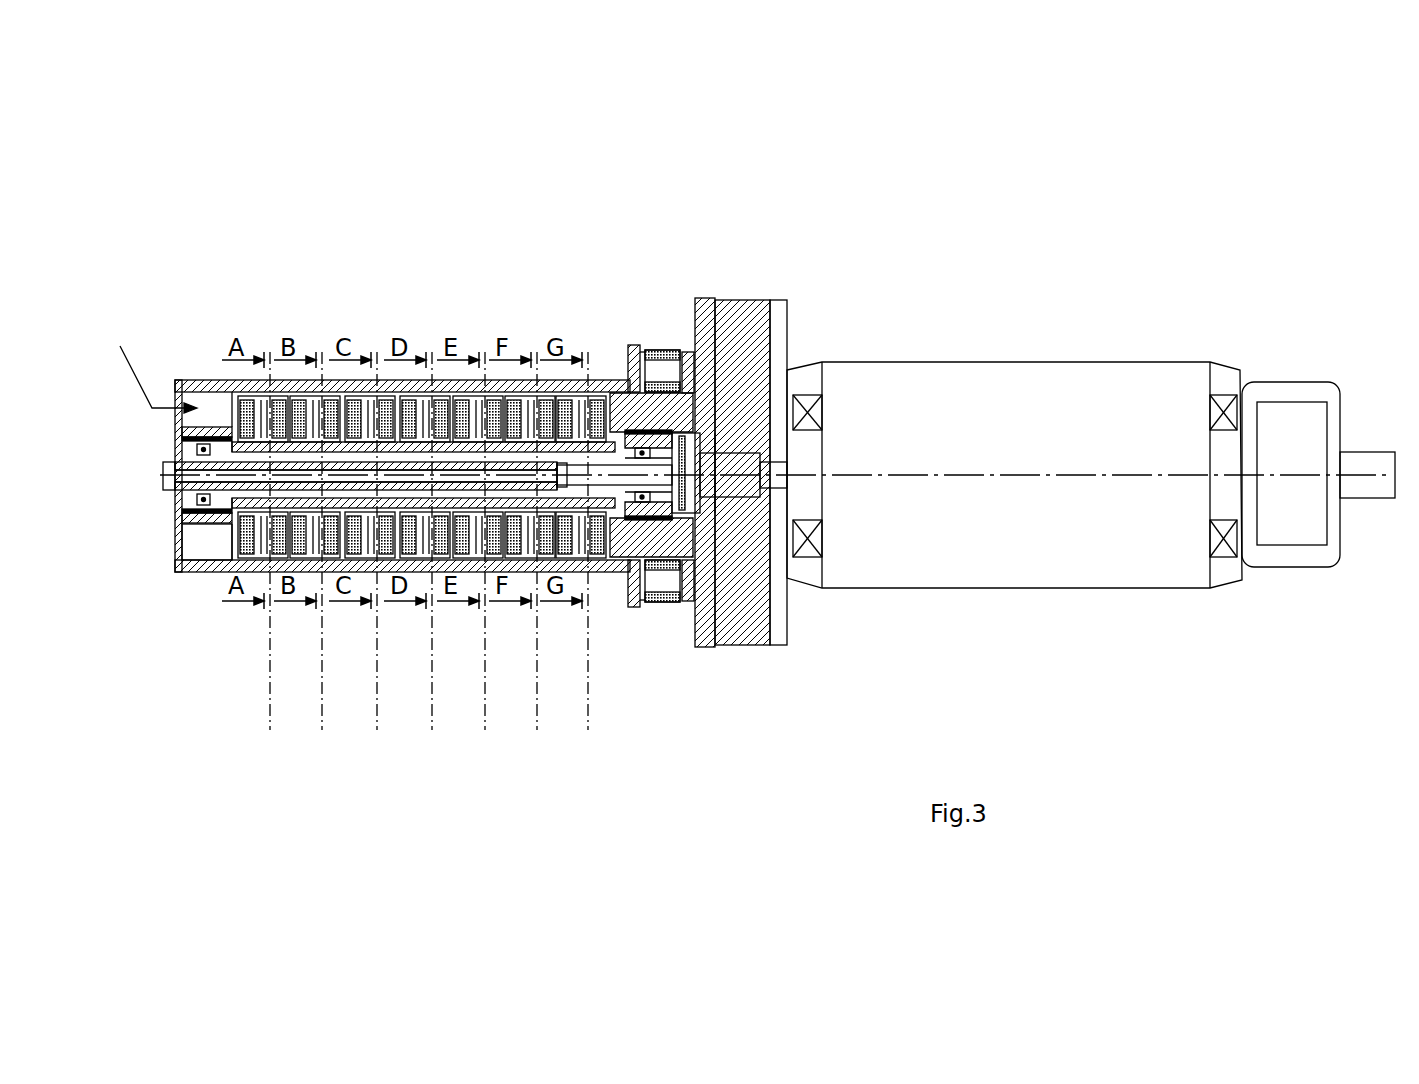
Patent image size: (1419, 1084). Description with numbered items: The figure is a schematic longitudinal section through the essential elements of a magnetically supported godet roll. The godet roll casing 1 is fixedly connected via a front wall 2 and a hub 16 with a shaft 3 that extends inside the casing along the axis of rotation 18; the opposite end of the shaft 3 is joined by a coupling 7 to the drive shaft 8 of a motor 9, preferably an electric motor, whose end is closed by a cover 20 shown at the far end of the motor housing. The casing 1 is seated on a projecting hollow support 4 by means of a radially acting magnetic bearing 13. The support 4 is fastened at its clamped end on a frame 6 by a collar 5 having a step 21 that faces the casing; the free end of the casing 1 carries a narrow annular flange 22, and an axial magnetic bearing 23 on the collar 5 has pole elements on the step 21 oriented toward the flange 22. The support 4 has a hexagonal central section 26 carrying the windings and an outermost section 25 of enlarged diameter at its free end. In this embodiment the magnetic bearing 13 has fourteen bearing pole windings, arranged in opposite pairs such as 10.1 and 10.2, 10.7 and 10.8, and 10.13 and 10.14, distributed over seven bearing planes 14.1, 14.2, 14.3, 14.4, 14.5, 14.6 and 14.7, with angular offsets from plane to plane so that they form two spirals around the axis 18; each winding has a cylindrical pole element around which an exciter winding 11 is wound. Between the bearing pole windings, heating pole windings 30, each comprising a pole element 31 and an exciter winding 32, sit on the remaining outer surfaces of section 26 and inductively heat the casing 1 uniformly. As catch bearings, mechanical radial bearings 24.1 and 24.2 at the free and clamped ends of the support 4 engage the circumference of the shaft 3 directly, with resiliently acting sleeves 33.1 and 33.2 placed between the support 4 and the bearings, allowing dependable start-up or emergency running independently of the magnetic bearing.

The godet roll casing 1 is at (191, 380).
The front wall 2 is at (178, 382).
The shaft 3 is at (583, 392).
The support 4 is at (302, 442).
The collar 5 is at (700, 330).
The frame 6 is at (688, 400).
The coupling 7 is at (706, 440).
The drive shaft 8 is at (774, 455).
The motor 9 is at (880, 418).
The exciter winding 11 is at (240, 563).
The magnetic bearing 13 is at (146, 366).
The hub 16 is at (233, 392).
The axis of rotation 18 is at (1062, 477).
The motor end cover 20 is at (1303, 525).
The step 21 is at (736, 612).
The annular flange 22 is at (660, 600).
The axial magnetic bearing 23 is at (703, 610).
The outermost section 25 is at (183, 560).
The central section 26 is at (308, 558).
The heating pole winding 30 is at (422, 357).
The pole element 31 is at (373, 427).
The exciter winding 32 is at (366, 399).
The bearing pole winding 10.1 is at (268, 385).
The bearing pole winding 10.2 is at (266, 570).
The bearing pole winding 10.7 is at (439, 384).
The bearing pole winding 10.8 is at (426, 570).
The bearing pole winding 10.13 is at (597, 384).
The bearing pole winding 10.14 is at (597, 570).
The bearing plane 14.1 is at (269, 566).
The bearing plane 14.2 is at (332, 563).
The bearing plane 14.3 is at (386, 566).
The bearing plane 14.4 is at (436, 561).
The bearing plane 14.5 is at (489, 566).
The bearing plane 14.6 is at (542, 561).
The bearing plane 14.7 is at (606, 566).
The radial bearing 24.1 is at (186, 518).
The radial bearing 24.2 is at (644, 514).
The resiliently acting sleeve 33.1 is at (197, 450).
The resiliently acting sleeve 33.2 is at (668, 514).